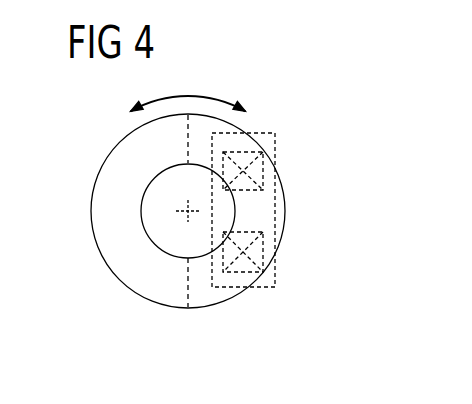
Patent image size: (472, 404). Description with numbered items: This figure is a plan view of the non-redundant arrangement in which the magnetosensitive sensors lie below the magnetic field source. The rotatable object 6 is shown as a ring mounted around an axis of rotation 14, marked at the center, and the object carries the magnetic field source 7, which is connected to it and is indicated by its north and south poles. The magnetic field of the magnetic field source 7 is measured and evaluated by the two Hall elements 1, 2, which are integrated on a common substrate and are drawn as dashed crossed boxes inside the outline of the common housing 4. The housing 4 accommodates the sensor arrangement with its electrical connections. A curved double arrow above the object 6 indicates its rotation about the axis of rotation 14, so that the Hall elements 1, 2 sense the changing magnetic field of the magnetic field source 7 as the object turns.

The Hall element 1 is at (268, 232).
The Hall element 2 is at (270, 172).
The common housing 4 is at (265, 132).
The object 6 is at (153, 172).
The magnetic field source 7 is at (145, 285).
The axis of rotation 14 is at (188, 212).